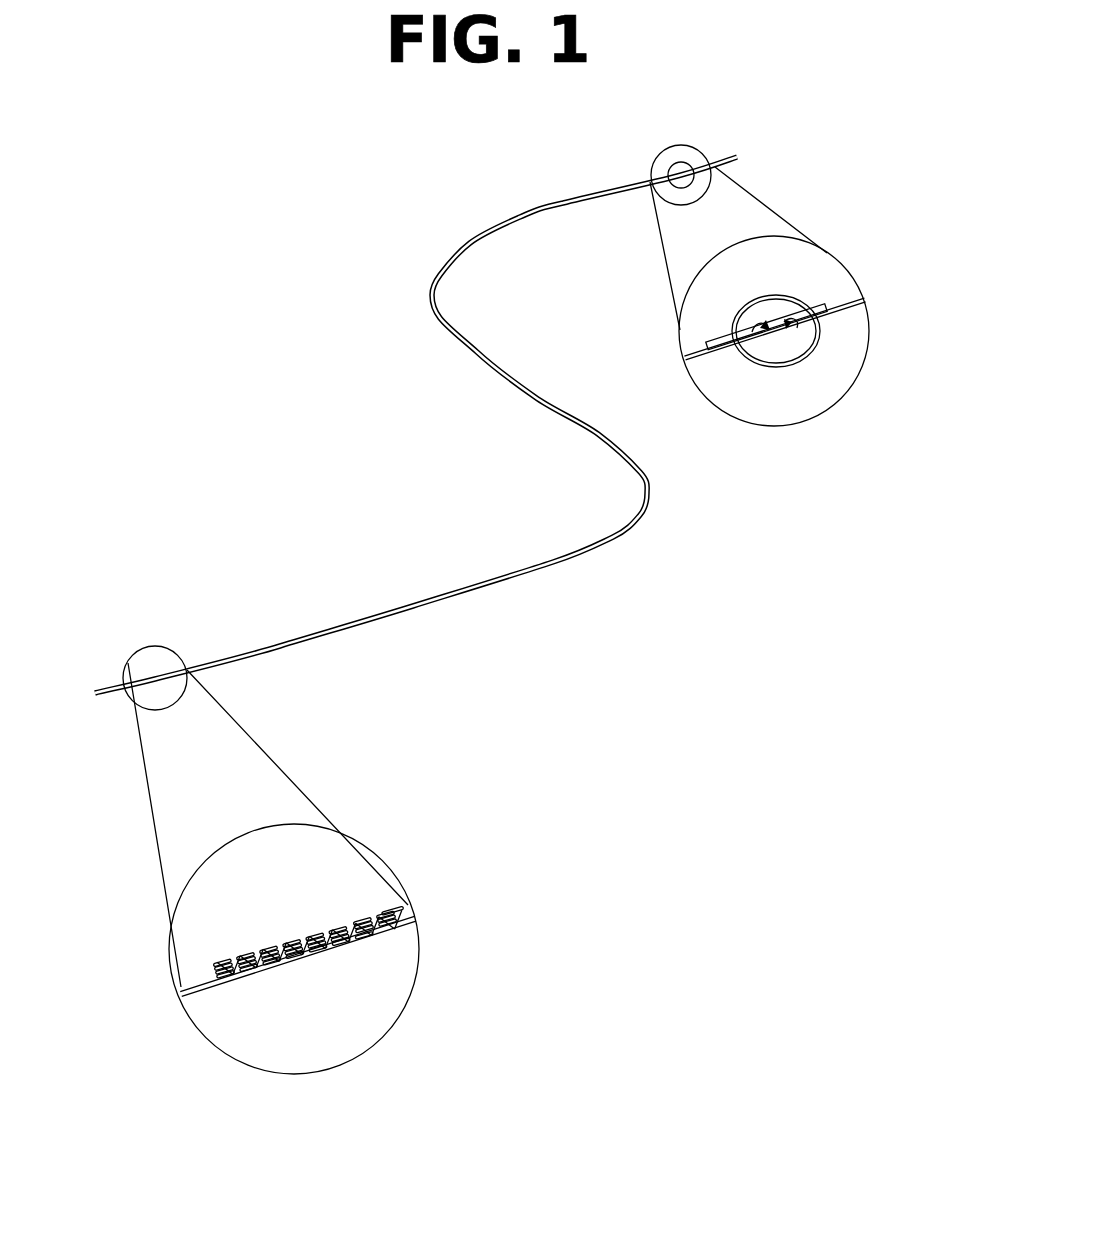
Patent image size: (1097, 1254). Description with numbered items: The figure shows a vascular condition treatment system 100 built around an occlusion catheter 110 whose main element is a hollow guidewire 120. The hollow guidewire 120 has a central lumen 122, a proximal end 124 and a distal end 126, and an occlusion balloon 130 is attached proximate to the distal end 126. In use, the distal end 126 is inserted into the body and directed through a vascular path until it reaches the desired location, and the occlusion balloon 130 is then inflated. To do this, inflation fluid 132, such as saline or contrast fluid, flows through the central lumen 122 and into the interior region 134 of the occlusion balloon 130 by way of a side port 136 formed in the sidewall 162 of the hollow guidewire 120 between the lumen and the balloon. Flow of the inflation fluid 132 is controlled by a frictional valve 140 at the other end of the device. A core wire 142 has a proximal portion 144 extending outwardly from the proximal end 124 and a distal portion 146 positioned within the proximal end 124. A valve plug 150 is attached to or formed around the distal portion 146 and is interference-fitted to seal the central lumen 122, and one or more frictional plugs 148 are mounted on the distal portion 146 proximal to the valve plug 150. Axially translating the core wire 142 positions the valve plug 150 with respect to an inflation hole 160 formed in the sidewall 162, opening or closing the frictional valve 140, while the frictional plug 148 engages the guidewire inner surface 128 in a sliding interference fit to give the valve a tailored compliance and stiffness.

The vascular condition treatment system 100 is at (113, 110).
The occlusion catheter 110 is at (336, 374).
The hollow guidewire 120 is at (505, 583).
The central lumen 122 is at (412, 926).
The proximal end 124 is at (128, 665).
The distal end 126 is at (737, 157).
The guidewire inner surface 128 is at (405, 919).
The occlusion balloon 130 is at (683, 163).
The inflation fluid 132 is at (745, 328).
The interior region 134 is at (768, 357).
The side port 136 is at (790, 314).
The frictional valve 140 is at (160, 657).
The core wire 142 is at (189, 993).
The proximal portion 144 is at (219, 969).
The distal portion 146 is at (267, 953).
The frictional plug 148 is at (329, 963).
The valve plug 150 is at (370, 950).
The inflation hole 160 is at (327, 941).
The sidewall 162 is at (348, 932).